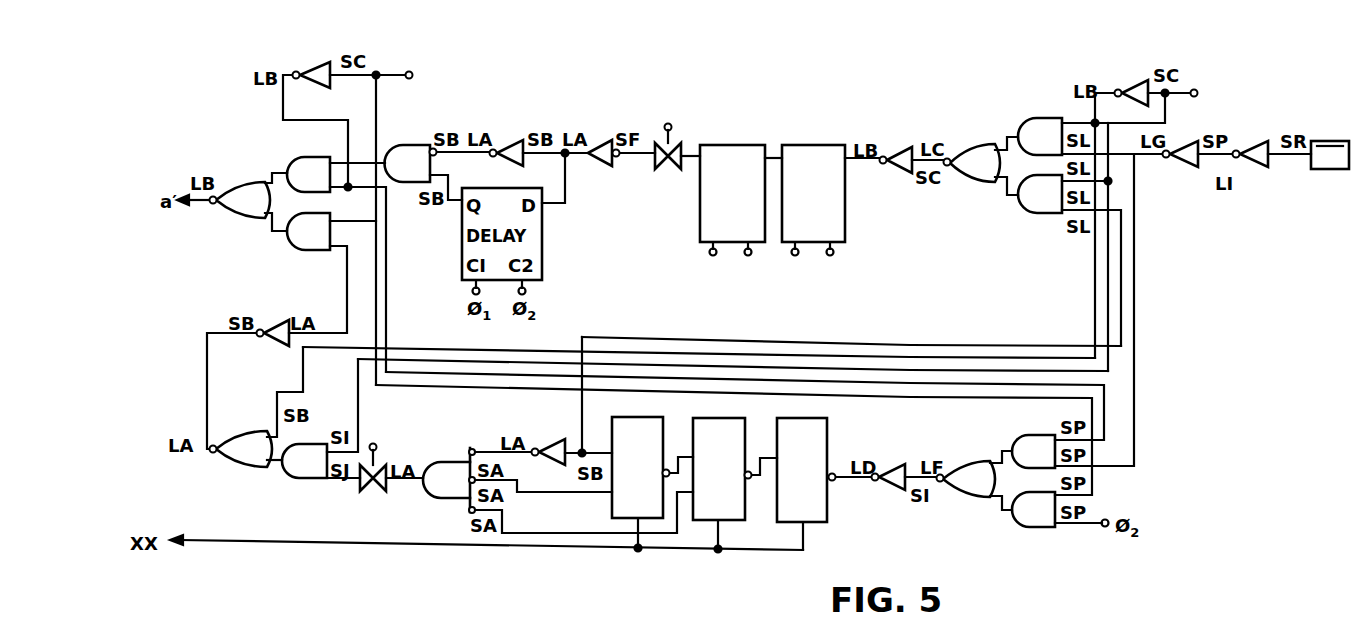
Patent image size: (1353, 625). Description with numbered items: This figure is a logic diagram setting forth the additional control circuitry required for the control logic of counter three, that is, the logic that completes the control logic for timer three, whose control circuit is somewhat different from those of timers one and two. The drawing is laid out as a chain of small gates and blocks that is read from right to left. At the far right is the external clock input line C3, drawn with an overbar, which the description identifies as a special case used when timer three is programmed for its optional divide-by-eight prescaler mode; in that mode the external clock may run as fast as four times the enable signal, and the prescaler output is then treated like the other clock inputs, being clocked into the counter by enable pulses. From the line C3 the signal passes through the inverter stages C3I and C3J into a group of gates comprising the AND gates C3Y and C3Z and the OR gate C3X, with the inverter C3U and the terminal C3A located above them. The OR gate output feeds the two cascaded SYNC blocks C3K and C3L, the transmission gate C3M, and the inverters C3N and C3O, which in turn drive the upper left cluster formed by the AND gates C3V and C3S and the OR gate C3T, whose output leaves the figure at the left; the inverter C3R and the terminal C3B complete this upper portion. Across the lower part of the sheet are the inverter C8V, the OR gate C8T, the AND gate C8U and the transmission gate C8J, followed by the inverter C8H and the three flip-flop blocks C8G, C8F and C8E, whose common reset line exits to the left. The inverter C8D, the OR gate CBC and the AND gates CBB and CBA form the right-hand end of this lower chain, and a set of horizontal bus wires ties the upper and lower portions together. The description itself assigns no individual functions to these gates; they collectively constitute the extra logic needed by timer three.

The inverter C3R is at (309, 64).
The output terminal C3B is at (431, 76).
The AND gate C3V is at (308, 162).
The OR gate C3T is at (240, 189).
The AND gate C3S is at (308, 245).
The inverter C3O is at (512, 136).
The inverter C3N is at (600, 136).
The transmission gate C3M is at (667, 159).
The synchronizer C3L is at (732, 207).
The synchronizer C3K is at (813, 207).
The OR gate C3X is at (972, 151).
The AND gate C3Y is at (1040, 125).
The AND gate C3Z is at (1038, 208).
The inverter C3U is at (1124, 80).
The output terminal C3A is at (1216, 94).
The inverter C3J is at (1181, 167).
The inverter C3I is at (1255, 167).
The external clock input line C3 is at (1330, 155).
The inverter C8V is at (273, 317).
The OR gate C8T is at (241, 435).
The AND gate C8U is at (304, 476).
The transmission gate C8J is at (369, 482).
The inverter C8H is at (554, 436).
The flip-flop C8G is at (641, 458).
The flip-flop C8F is at (722, 458).
The flip-flop C8E is at (806, 459).
The inverter C8D is at (890, 461).
The OR gate CBC is at (966, 465).
The AND gate CBB is at (1033, 440).
The AND gate CBA is at (1032, 522).